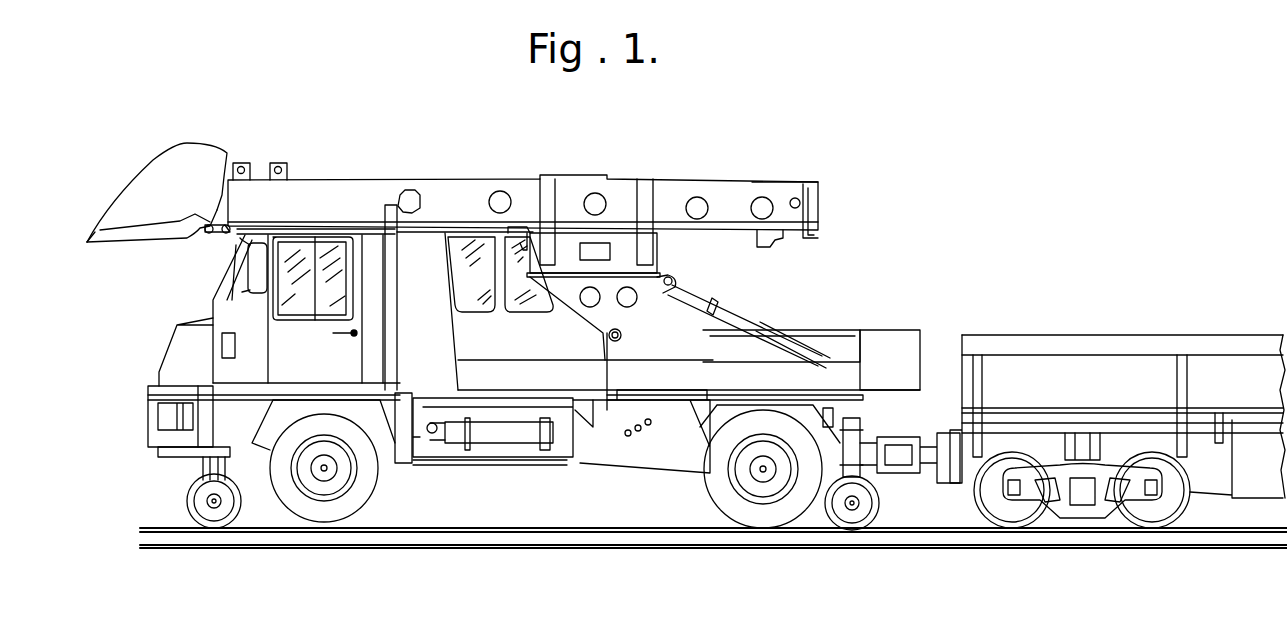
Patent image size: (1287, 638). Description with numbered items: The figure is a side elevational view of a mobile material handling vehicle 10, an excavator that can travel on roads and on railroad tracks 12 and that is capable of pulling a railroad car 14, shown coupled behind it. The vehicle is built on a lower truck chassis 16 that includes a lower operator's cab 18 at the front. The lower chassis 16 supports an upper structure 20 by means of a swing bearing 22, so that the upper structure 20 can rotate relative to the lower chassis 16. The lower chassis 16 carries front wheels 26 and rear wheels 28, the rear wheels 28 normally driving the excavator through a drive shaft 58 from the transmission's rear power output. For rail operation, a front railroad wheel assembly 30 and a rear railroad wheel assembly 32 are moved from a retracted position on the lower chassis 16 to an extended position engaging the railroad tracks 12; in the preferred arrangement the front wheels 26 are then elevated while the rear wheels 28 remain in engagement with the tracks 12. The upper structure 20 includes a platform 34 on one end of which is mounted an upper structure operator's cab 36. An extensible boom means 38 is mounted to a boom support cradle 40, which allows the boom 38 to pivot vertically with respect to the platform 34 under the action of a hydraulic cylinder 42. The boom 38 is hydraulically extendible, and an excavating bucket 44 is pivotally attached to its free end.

The mobile material handling vehicle 10 is at (429, 162).
The railroad tracks 12 is at (600, 527).
The railroad car 14 is at (1053, 340).
The lower truck chassis 16 is at (147, 425).
The lower operator's cab 18 is at (243, 322).
The upper structure 20 is at (802, 318).
The swing bearing 22 is at (687, 400).
The front wheels 26 is at (365, 490).
The rear wheels 28 is at (713, 492).
The front railroad wheel assembly 30 is at (188, 493).
The rear railroad wheel assembly 32 is at (880, 505).
The platform 34 is at (487, 378).
The upper structure operator's cab 36 is at (472, 330).
The extensible boom means 38 is at (684, 178).
The boom support cradle 40 is at (603, 310).
The hydraulic cylinder 42 is at (743, 308).
The excavating bucket 44 is at (150, 165).
The drive shaft 58 is at (508, 468).